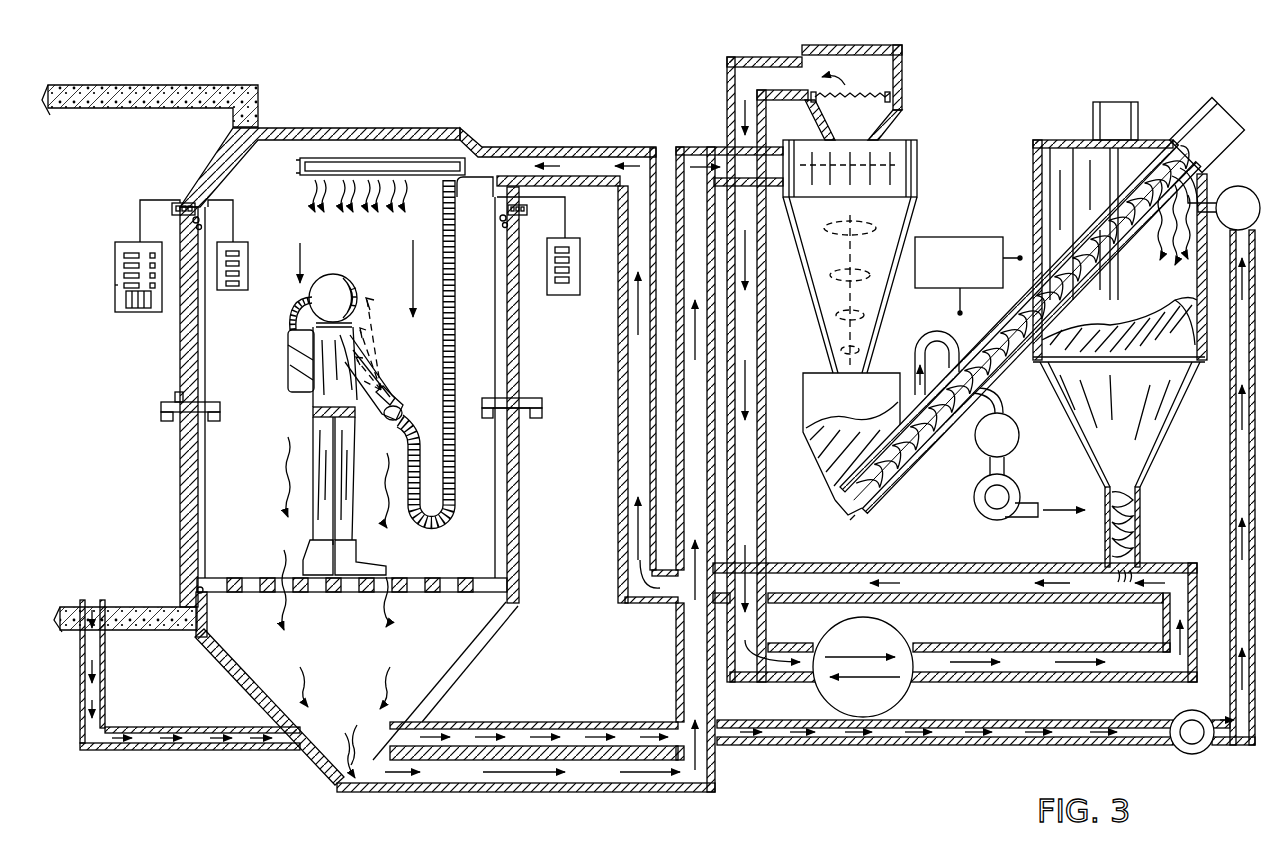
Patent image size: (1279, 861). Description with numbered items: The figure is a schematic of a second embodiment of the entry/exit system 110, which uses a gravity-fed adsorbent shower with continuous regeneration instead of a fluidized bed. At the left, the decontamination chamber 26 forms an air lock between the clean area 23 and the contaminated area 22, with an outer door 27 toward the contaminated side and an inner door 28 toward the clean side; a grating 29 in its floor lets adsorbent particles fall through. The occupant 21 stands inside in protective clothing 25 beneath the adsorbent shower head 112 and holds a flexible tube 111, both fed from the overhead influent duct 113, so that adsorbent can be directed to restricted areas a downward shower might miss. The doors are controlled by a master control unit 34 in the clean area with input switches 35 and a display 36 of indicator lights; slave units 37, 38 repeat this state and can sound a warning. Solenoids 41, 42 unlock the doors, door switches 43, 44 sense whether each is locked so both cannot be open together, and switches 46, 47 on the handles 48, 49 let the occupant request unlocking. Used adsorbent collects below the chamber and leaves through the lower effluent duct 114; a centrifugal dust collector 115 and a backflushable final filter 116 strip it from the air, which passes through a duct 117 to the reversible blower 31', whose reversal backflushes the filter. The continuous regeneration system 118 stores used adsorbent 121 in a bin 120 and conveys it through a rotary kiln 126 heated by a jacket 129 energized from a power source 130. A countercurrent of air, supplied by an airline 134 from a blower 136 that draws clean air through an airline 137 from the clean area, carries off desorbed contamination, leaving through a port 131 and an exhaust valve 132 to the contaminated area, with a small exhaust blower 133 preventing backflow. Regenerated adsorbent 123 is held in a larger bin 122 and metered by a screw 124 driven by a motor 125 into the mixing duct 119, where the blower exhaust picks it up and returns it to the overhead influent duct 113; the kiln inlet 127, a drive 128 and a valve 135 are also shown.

The occupant 21 is at (330, 350).
The contaminated area 22 is at (819, 786).
The clean area 23 is at (102, 481).
The protective clothing 25 is at (350, 285).
The decontamination chamber 26 is at (247, 352).
The outer door 27 is at (520, 543).
The inner door 28 is at (182, 548).
The grating 29 is at (480, 592).
The reversible blower 31' is at (955, 640).
The master control unit 34 is at (114, 284).
The input switches 35 is at (133, 304).
The display 36 is at (135, 257).
The slave unit 37 is at (568, 238).
The slave unit 38 is at (232, 290).
The solenoid 41 is at (527, 213).
The solenoid 42 is at (180, 195).
The door switch 43 is at (503, 219).
The door switch 44 is at (200, 220).
The switch 46 is at (497, 398).
The switch 47 is at (176, 397).
The handle 48 is at (485, 416).
The handle 49 is at (161, 408).
The entry/exit system 110 is at (243, 771).
The flexible tube 111 is at (452, 520).
The adsorbent shower head 112 is at (300, 160).
The overhead influent duct 113 is at (556, 160).
The lower effluent duct 114 is at (463, 773).
The centrifugal dust collector 115 is at (916, 158).
The backflushable final filter 116 is at (896, 104).
The duct 117 is at (753, 524).
The continuous regeneration system 118 is at (952, 450).
The mixing duct 119 is at (1150, 560).
The used adsorbent bin 120 is at (803, 377).
The used adsorbent 121 is at (818, 468).
The regenerated adsorbent bin 122 is at (1168, 448).
The regenerated adsorbent 123 is at (1197, 362).
The screw 124 is at (1140, 517).
The motor 125 is at (1093, 105).
The rotary kiln 126 is at (1024, 370).
The conveyor inlet 127 is at (858, 504).
The motor 128 is at (1196, 103).
The heating jacket 129 is at (1058, 237).
The power source 130 is at (970, 237).
The port 131 is at (915, 352).
The exhaust valve 132 is at (1015, 446).
The exhaust blower 133 is at (995, 520).
The airline 134 is at (1237, 483).
The valve 135 is at (1240, 186).
The blower 136 is at (1177, 712).
The airline 137 is at (106, 712).